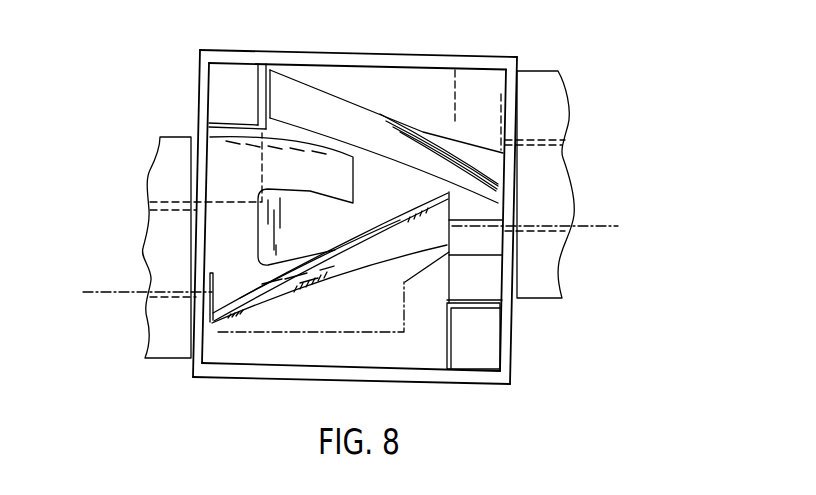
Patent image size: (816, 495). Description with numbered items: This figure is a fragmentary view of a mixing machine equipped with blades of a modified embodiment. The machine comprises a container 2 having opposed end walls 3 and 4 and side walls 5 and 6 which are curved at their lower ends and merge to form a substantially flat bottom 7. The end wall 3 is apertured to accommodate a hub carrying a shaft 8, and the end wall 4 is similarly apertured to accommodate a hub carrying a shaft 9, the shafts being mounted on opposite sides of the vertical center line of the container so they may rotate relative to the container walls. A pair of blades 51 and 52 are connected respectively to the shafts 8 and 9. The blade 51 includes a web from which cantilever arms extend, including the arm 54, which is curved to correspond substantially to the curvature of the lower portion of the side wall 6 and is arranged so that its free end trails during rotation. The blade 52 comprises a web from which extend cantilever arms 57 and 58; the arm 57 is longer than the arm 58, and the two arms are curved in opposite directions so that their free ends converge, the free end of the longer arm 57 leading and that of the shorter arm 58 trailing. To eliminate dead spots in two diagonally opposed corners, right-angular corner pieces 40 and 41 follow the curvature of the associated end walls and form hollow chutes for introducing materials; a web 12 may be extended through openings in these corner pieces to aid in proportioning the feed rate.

The container 2 is at (357, 208).
The end wall 3 is at (515, 341).
The end wall 4 is at (200, 87).
The side wall 5 is at (333, 379).
The side wall 6 is at (337, 50).
The bottom 7 is at (409, 209).
The shaft 8 is at (564, 161).
The shaft 9 is at (170, 288).
The web 12 is at (512, 107).
The corner piece 40 is at (445, 349).
The corner piece 41 is at (266, 100).
The blade 51 is at (422, 121).
The blade 52 is at (355, 294).
The cantilever arm 54 is at (338, 103).
The cantilever arm 57 is at (332, 258).
The cantilever arm 58 is at (350, 177).